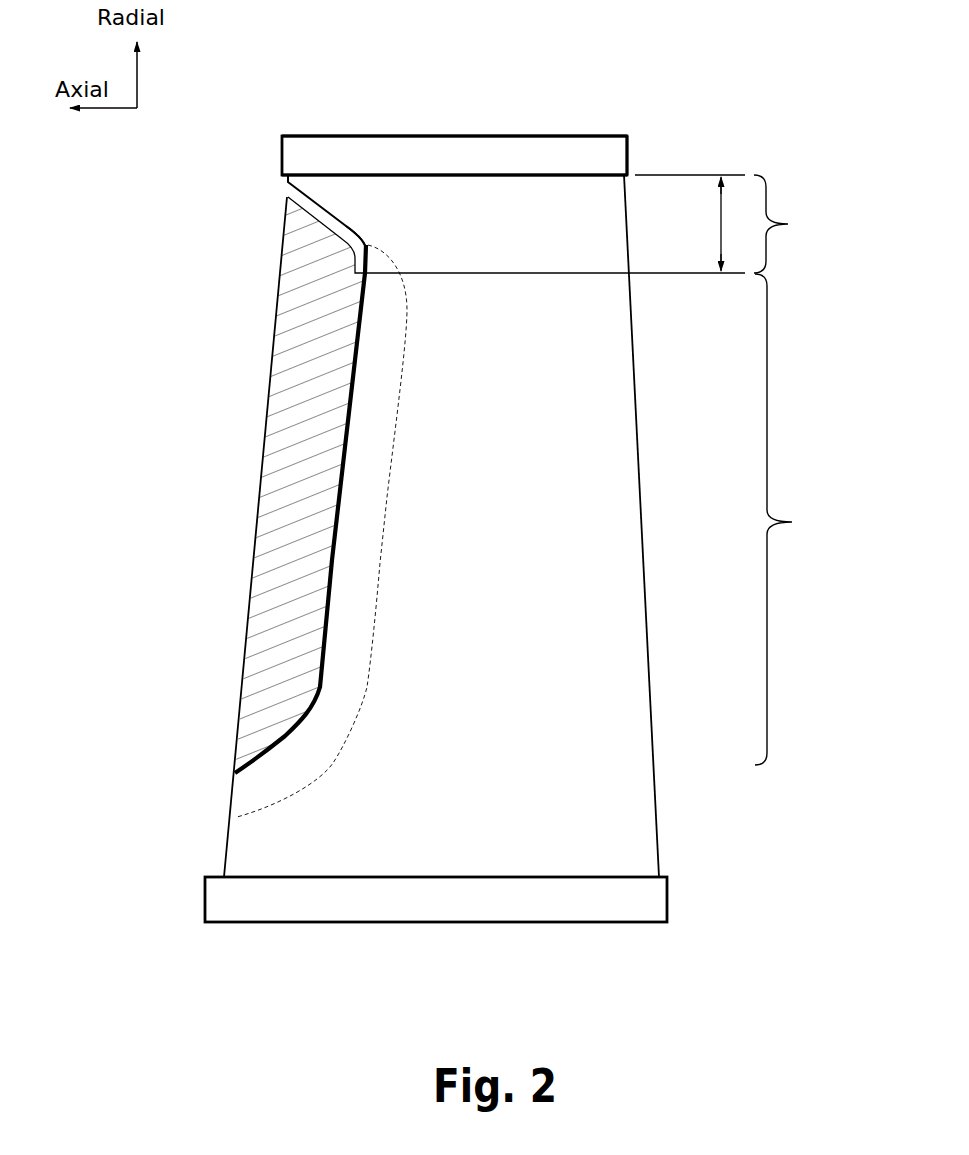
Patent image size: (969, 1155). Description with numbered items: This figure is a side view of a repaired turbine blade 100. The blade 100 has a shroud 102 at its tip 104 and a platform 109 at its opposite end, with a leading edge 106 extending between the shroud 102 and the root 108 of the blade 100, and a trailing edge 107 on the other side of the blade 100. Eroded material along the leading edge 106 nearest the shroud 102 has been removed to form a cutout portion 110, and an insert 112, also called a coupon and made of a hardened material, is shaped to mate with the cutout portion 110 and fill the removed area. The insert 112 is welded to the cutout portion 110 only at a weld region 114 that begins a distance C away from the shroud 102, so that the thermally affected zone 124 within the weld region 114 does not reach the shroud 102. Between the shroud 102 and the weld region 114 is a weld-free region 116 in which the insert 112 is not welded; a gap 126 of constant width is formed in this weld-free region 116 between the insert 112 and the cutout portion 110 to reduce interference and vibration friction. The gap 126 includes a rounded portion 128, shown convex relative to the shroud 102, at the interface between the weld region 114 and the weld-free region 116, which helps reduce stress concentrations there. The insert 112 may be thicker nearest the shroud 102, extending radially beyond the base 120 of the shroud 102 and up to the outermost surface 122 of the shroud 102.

The turbine blade 100 is at (459, 465).
The shroud 102 is at (352, 157).
The tip 104 is at (643, 163).
The leading edge 106 is at (210, 806).
The trailing edge 107 is at (640, 437).
The root 108 is at (665, 848).
The platform 109 is at (672, 905).
The cutout portion 110 is at (328, 660).
The insert 112 is at (280, 573).
The weld region 114 is at (797, 519).
The weld-free region 116 is at (797, 224).
The base of shroud 120 is at (496, 182).
The outermost surface of shroud 122 is at (512, 132).
The thermally affected zone 124 is at (405, 383).
The gap 126 is at (322, 219).
The rounded portion 128 is at (377, 240).